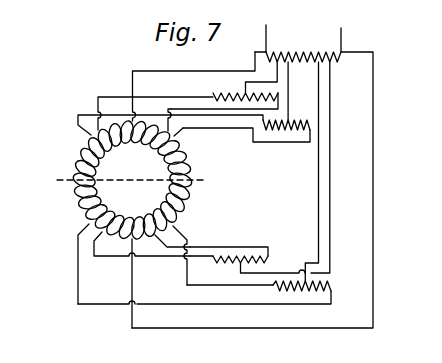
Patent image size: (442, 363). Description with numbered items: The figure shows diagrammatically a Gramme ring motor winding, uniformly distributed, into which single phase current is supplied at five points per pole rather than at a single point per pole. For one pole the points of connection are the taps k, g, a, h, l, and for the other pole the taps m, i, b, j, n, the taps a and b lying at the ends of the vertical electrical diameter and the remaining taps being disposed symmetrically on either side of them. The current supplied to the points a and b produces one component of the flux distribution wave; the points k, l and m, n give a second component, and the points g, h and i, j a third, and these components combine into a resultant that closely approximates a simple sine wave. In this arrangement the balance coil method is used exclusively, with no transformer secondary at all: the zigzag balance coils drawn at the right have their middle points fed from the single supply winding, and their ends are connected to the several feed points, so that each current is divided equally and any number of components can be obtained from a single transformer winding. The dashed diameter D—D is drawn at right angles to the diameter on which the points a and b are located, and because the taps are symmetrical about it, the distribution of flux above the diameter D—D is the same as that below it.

The point of connection a is at (194, 86).
The point of connection b is at (125, 283).
The point of connection g is at (150, 116).
The point of connection h is at (173, 121).
The point of connection i is at (138, 243).
The point of connection j is at (171, 246).
The point of connection k is at (117, 134).
The point of connection l is at (181, 138).
The point of connection m is at (73, 258).
The point of connection n is at (183, 250).
The diameter D is at (130, 180).